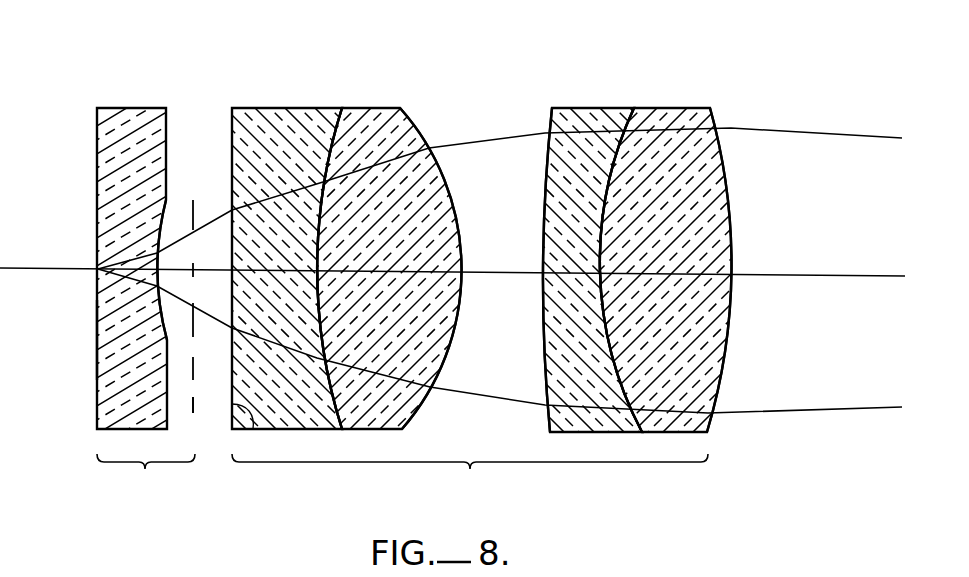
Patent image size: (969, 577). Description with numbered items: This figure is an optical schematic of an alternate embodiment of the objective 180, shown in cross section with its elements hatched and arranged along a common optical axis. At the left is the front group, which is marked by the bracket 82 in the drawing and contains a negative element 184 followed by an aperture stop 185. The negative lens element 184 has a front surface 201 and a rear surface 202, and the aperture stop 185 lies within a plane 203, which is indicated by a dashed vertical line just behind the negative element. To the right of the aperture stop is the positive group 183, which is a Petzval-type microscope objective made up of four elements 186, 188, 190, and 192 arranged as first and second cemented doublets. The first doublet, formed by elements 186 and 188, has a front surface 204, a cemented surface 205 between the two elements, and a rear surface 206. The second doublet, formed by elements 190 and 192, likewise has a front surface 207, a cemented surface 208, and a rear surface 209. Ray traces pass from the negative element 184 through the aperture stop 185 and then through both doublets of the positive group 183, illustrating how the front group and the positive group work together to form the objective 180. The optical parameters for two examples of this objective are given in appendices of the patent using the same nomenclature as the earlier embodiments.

The objective 180 is at (346, 52).
The negative element 184 is at (120, 127).
The aperture stop 185 is at (195, 198).
The element 186 is at (263, 125).
The element 188 is at (373, 127).
The element 190 is at (570, 125).
The element 192 is at (672, 125).
The front surface 201 is at (97, 338).
The rear surface 202 is at (158, 243).
The plane 203 is at (193, 430).
The surface 204 is at (308, 450).
The cemented surface 205 is at (380, 243).
The surface 206 is at (513, 210).
The surface 207 is at (543, 363).
The cemented surface 208 is at (665, 340).
The surface 209 is at (790, 340).
The first lens group 82 is at (146, 475).
The positive group 183 is at (470, 475).